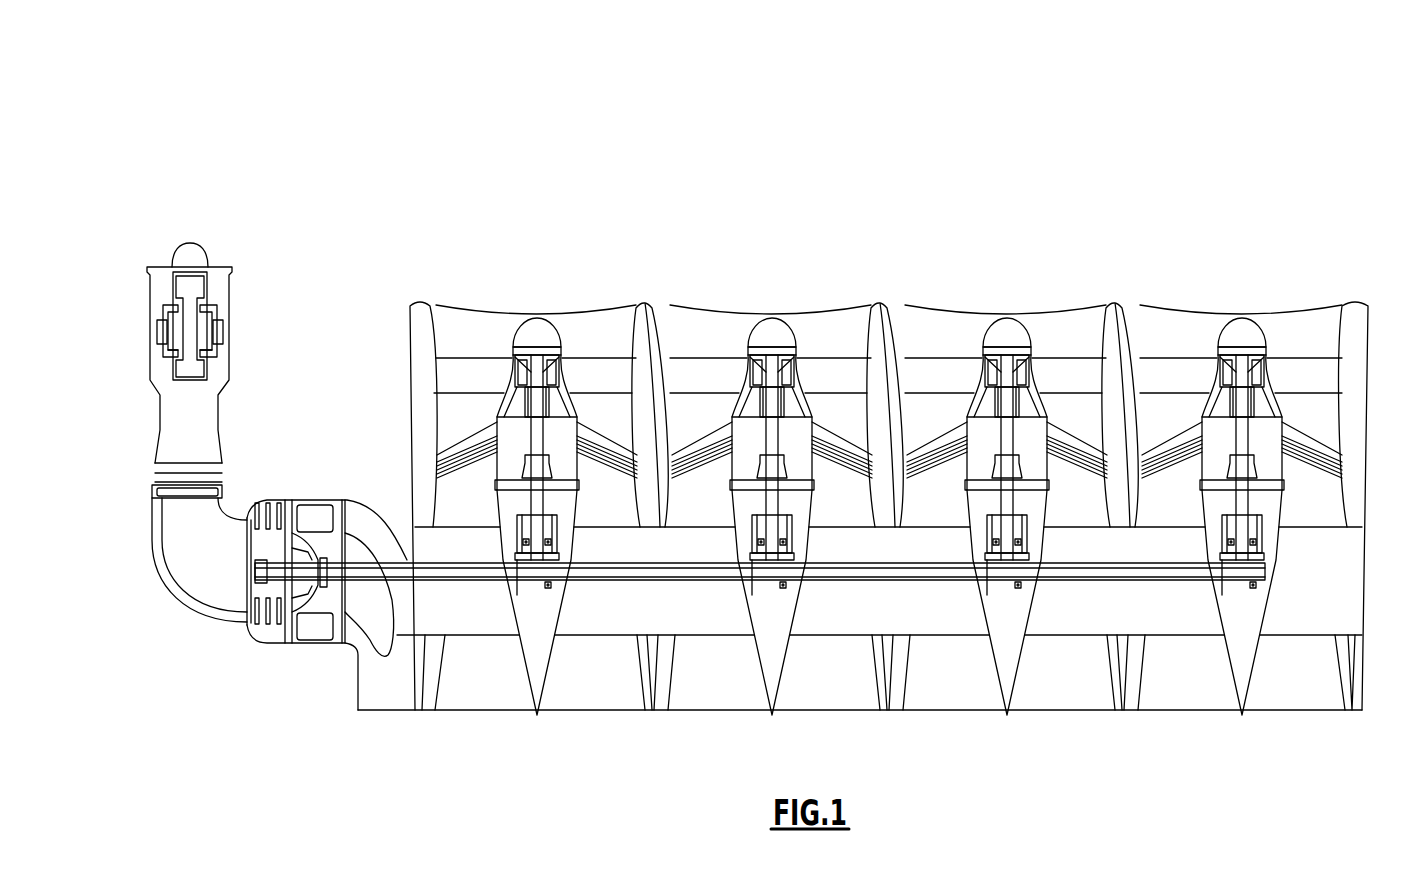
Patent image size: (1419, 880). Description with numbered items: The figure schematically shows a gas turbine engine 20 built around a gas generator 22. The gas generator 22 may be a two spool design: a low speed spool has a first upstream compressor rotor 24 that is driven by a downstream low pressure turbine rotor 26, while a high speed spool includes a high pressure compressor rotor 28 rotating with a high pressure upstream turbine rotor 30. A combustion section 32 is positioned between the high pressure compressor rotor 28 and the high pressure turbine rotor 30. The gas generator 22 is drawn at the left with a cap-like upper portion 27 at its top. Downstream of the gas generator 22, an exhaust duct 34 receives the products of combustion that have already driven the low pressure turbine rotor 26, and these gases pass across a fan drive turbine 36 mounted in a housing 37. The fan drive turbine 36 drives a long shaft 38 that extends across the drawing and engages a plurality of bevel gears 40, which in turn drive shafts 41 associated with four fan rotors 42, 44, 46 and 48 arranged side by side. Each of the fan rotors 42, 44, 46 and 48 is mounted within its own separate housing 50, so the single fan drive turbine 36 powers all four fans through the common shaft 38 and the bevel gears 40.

The gas turbine engine 20 is at (1022, 196).
The gas generator 22 is at (234, 415).
The first upstream compressor rotor 24 is at (197, 286).
The low pressure turbine rotor 26 is at (178, 372).
The actuator cap 27 is at (158, 272).
The high pressure compressor rotor 28 is at (214, 306).
The high pressure turbine rotor 30 is at (214, 353).
The combustion section 32 is at (216, 329).
The exhaust duct 34 is at (190, 542).
The fan drive turbine 36 is at (275, 603).
The housing 37 is at (308, 578).
The shaft 38 is at (475, 573).
The bevel gears 40 is at (550, 557).
The shafts 41 is at (535, 447).
The fan rotor 42 is at (577, 368).
The fan rotor 44 is at (812, 368).
The fan rotor 46 is at (1043, 368).
The fan rotor 48 is at (1192, 372).
The housings 50 is at (424, 322).